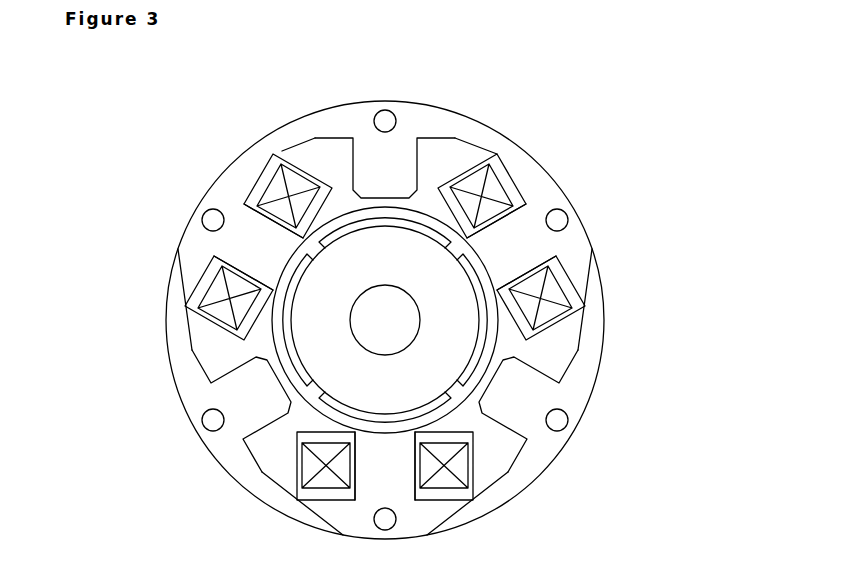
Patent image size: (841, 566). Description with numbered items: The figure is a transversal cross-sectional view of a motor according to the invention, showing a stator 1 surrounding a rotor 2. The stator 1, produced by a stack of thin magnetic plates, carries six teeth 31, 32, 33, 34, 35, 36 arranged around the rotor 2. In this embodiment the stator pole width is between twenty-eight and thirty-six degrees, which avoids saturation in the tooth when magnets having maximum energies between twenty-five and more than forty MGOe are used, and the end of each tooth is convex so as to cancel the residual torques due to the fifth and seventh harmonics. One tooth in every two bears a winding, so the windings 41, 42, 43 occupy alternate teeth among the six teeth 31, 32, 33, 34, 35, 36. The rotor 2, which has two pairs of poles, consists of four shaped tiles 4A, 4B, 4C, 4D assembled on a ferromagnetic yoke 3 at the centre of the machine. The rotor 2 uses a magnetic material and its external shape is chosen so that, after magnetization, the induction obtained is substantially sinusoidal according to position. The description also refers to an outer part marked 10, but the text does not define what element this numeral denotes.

The stator 1 is at (548, 164).
The rotor 2 is at (447, 351).
The ferromagnetic yoke 3 is at (358, 270).
The frame 10 is at (595, 317).
The tooth 31 is at (527, 245).
The tooth 32 is at (509, 410).
The tooth 33 is at (383, 467).
The tooth 34 is at (263, 393).
The tooth 35 is at (268, 243).
The tooth 36 is at (387, 177).
The winding 41 is at (468, 172).
The winding 42 is at (327, 463).
The winding 43 is at (214, 329).
The shaped tile 4A is at (490, 343).
The shaped tile 4B is at (310, 393).
The shaped tile 4C is at (283, 330).
The shaped tile 4D is at (410, 218).